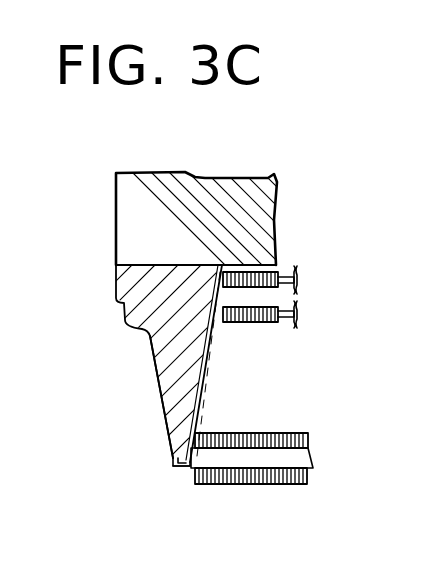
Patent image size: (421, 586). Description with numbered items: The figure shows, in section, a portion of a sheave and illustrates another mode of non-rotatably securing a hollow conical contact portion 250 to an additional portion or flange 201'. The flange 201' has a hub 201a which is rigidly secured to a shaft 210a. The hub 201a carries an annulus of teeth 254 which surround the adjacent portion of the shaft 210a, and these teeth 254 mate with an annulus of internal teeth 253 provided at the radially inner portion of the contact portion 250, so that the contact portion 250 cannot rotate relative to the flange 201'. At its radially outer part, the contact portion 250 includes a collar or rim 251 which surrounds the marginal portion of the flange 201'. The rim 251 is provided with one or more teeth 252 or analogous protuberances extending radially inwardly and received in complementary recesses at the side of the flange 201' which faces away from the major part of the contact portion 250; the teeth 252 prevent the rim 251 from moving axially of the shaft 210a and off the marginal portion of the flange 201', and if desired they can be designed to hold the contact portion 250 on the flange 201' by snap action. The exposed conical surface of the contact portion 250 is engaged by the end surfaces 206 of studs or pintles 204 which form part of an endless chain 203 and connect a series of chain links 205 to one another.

The shaft 210a is at (147, 192).
The teeth 254 is at (222, 266).
The internal teeth 253 is at (218, 287).
The hub 201a is at (146, 316).
The flange 201' is at (103, 397).
The teeth 252 is at (172, 462).
The rim 251 is at (180, 470).
The conical contact portion 250 is at (210, 394).
The end surfaces 206 is at (312, 457).
The endless chain 203 is at (266, 481).
The chain links 205 is at (253, 485).
The studs or pintles 204 is at (293, 462).